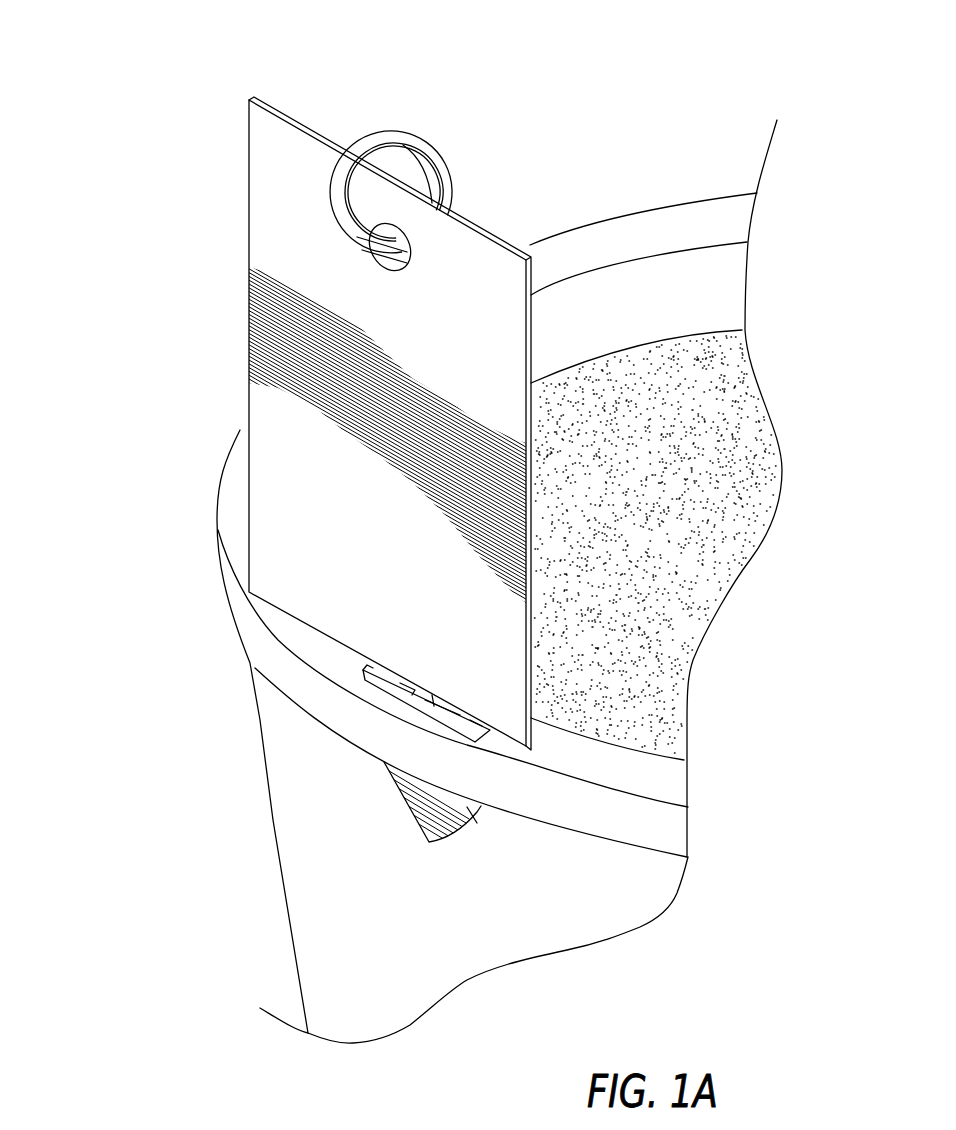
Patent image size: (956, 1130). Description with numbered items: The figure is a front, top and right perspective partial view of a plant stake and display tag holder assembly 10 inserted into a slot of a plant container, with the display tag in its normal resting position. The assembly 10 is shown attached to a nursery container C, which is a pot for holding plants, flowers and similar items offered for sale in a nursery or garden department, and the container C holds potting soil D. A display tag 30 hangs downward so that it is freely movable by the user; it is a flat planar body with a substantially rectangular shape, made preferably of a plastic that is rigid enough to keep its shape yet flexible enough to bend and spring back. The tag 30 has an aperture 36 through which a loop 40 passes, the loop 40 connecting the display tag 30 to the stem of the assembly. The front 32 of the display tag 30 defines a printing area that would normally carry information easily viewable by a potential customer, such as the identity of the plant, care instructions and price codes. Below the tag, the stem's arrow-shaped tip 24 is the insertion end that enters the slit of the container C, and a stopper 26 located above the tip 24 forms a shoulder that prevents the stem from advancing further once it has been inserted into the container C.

The plant stake and display tag holder assembly 10 is at (286, 443).
The display tag 30 is at (289, 380).
The front 32 is at (305, 524).
The loop 40 is at (404, 134).
The aperture 36 is at (393, 273).
The stopper 26 is at (363, 670).
The tip 24 is at (430, 840).
The nursery container C is at (360, 955).
The potting soil D is at (723, 447).